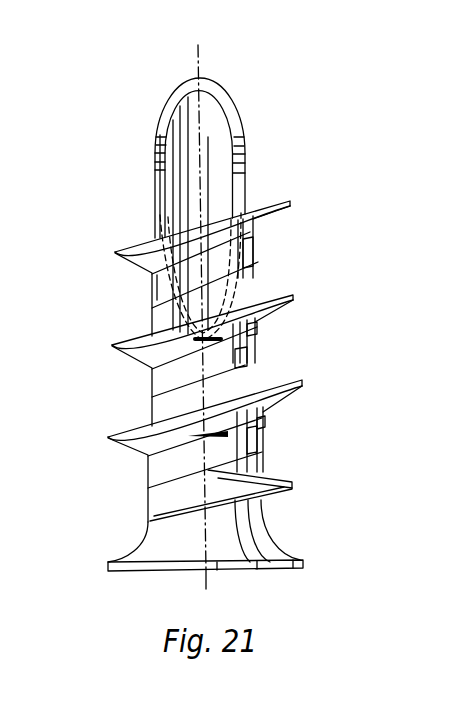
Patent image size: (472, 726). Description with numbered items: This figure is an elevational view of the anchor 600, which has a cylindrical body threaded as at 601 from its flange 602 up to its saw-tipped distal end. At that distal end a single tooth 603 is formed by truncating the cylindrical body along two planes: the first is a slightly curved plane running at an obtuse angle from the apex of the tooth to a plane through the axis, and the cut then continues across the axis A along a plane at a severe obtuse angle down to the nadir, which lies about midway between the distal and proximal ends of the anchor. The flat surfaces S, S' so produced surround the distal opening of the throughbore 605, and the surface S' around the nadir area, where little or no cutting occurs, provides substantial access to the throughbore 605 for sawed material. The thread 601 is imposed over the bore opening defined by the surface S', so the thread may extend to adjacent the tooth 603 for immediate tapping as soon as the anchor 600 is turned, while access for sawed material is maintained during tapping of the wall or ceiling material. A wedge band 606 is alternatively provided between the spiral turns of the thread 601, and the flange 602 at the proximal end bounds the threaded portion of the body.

The anchor 600 is at (319, 378).
The thread 601 is at (277, 284).
The flange 602 is at (262, 553).
The tooth 603 is at (205, 85).
The throughbore 605 is at (221, 173).
The wedge band 606 is at (252, 434).
The flat surface S is at (168, 209).
The flat surface S' is at (280, 250).
The axis A is at (199, 128).